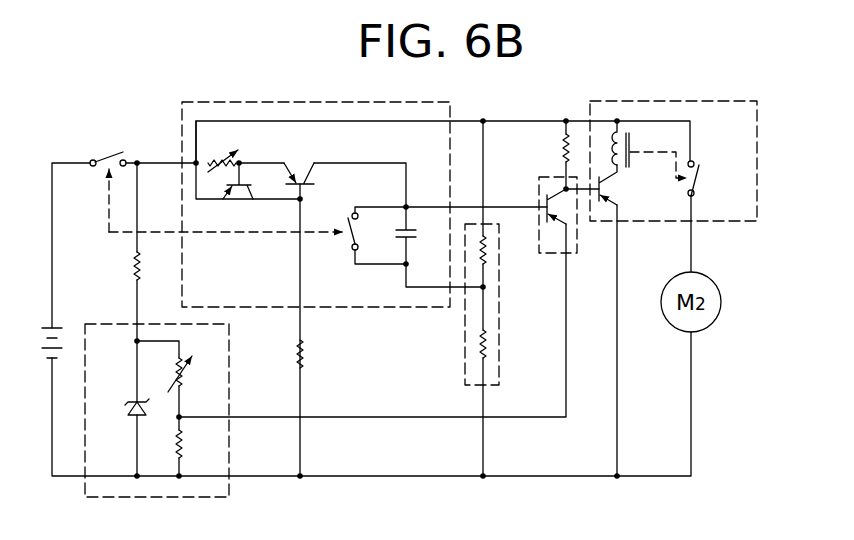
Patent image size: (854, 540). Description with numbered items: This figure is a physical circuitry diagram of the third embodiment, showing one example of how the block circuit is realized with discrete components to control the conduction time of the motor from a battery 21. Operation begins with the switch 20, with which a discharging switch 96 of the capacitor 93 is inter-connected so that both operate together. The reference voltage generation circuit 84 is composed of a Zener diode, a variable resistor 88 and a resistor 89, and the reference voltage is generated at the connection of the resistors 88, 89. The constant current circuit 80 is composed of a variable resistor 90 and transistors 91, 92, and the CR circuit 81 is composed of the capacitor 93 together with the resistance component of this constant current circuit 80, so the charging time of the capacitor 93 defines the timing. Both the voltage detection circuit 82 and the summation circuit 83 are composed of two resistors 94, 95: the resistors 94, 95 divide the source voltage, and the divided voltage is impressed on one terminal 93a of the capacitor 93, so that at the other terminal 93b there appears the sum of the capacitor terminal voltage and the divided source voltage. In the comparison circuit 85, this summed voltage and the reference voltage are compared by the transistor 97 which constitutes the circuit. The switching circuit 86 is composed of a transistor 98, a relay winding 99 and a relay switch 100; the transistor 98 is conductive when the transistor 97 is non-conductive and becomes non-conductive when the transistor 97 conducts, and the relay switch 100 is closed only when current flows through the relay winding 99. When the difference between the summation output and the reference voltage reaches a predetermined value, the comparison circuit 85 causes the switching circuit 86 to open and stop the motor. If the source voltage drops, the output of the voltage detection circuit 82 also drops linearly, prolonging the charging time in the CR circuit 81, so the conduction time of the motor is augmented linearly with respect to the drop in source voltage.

The switch 20 is at (102, 154).
The battery 21 is at (66, 346).
The constant current circuit 80 is at (316, 230).
The CR circuit 81 is at (263, 307).
The voltage detection circuit 82 is at (431, 304).
The summation circuit 83 is at (465, 357).
The reference voltage generation circuit 84 is at (229, 487).
The comparison circuit 85 is at (569, 254).
The switching circuit 86 is at (713, 100).
The variable resistor 88 is at (192, 362).
The resistor 89 is at (183, 441).
The variable resistor 90 is at (238, 150).
The transistor 91 is at (236, 192).
The transistor 92 is at (297, 181).
The capacitor 93 is at (400, 231).
The terminal of capacitor 93a is at (403, 267).
The other terminal of capacitor 93b is at (407, 205).
The resistor 94 is at (487, 258).
The resistor 95 is at (489, 345).
The discharging switch 96 is at (349, 243).
The transistor 97 is at (557, 220).
The transistor 98 is at (613, 198).
The relay winding 99 is at (631, 141).
The relay switch 100 is at (720, 183).